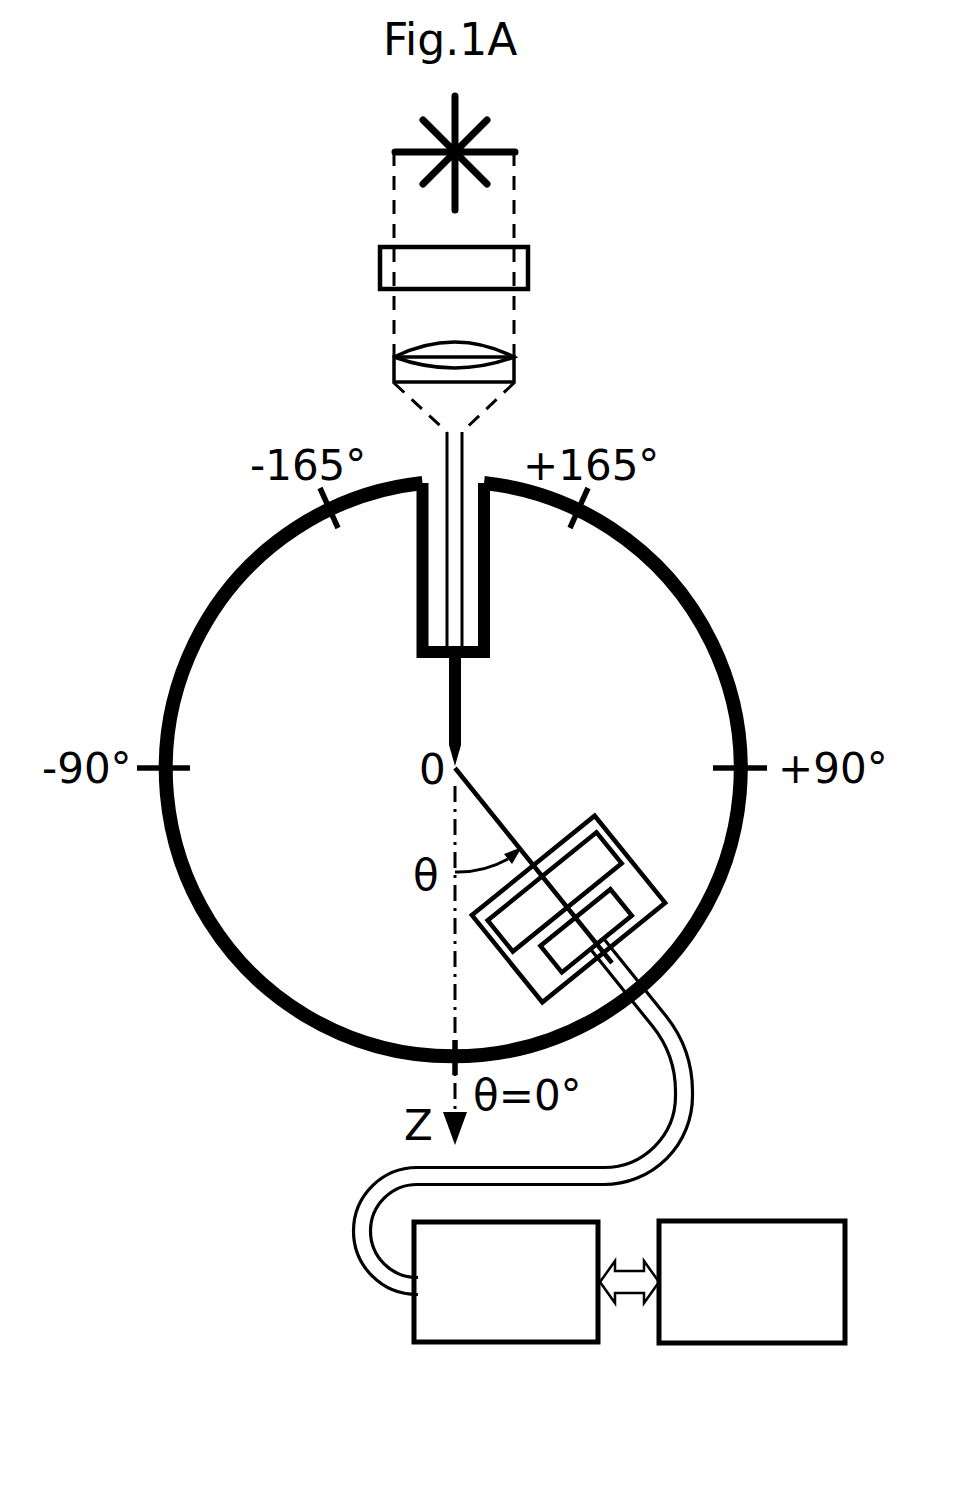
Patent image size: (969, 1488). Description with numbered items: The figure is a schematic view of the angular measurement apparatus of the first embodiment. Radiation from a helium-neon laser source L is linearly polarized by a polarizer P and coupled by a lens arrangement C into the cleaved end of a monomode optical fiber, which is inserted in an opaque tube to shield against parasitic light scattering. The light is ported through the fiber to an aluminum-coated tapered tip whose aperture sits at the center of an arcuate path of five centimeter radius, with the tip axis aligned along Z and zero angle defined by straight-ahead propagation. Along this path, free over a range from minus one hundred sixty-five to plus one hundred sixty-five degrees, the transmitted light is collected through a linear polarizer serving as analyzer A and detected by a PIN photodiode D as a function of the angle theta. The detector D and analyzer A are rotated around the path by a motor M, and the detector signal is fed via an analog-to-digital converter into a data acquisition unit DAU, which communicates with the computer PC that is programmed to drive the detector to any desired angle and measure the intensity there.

The helium-neon laser source L is at (481, 153).
The polarizer P is at (475, 269).
The lens arrangement C is at (484, 364).
The analyzer A is at (612, 848).
The detector D is at (620, 903).
The motor M is at (530, 987).
The data acquisition unit DAU is at (506, 1282).
The computer PC is at (752, 1282).